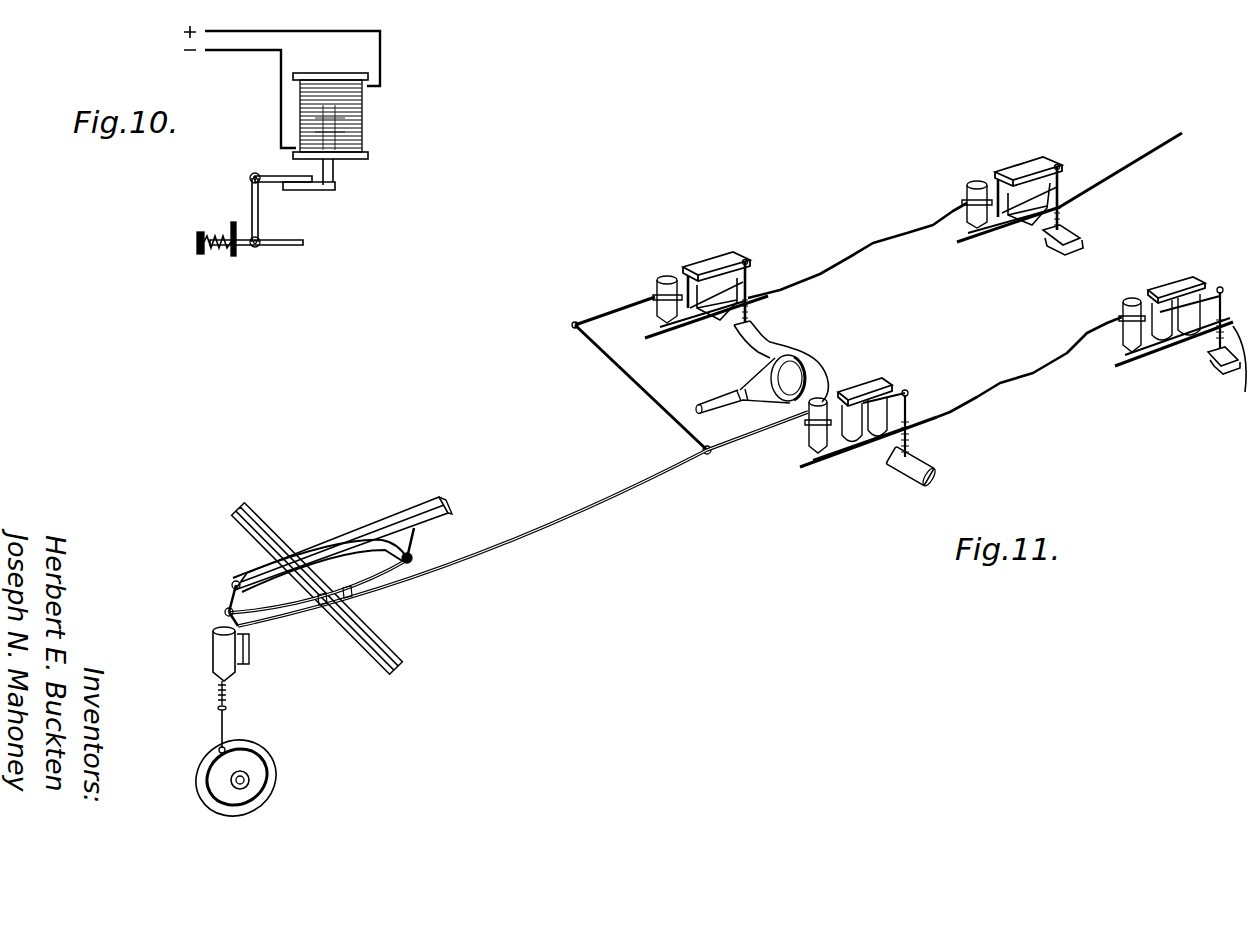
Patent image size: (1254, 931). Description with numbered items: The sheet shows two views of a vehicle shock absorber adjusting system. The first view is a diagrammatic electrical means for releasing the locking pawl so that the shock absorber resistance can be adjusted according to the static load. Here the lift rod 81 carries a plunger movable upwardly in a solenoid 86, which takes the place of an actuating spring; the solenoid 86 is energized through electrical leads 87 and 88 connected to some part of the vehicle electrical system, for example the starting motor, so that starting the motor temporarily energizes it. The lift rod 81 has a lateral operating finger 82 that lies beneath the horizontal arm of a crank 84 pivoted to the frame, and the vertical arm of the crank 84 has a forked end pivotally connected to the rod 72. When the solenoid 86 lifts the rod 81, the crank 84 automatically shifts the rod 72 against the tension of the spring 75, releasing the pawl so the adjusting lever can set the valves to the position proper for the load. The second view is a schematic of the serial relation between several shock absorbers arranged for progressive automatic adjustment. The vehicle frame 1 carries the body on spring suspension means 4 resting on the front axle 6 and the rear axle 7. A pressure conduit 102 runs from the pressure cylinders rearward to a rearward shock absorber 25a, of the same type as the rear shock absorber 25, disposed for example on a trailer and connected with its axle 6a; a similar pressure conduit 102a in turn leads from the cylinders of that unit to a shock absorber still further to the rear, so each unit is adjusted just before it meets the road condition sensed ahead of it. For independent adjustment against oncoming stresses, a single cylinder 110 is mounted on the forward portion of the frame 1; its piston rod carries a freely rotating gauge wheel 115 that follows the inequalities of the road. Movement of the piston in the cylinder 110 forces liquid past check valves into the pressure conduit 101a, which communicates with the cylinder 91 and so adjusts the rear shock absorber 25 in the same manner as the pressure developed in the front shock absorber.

In FIG. 10, the electrical lead 88 is at (383, 52).
In FIG. 10, the electrical lead 87 is at (280, 70).
In FIG. 10, the solenoid 86 is at (363, 130).
In FIG. 10, the lift rod 81 is at (335, 176).
In FIG. 10, the operating finger 82 is at (310, 190).
In FIG. 10, the crank 84 is at (278, 172).
In FIG. 10, the link or rod 72 is at (283, 252).
In FIG. 11, the link or rod 72 is at (655, 333).
In FIG. 10, the spring 75 is at (215, 252).
In FIG. 11, the rear shock absorber 25 is at (733, 230).
In FIG. 11, the rearward shock absorber 25a is at (1010, 165).
In FIG. 11, the cylinder 91 is at (657, 290).
In FIG. 11, the rear axle 7 is at (760, 333).
In FIG. 11, the pressure conduit 102 is at (868, 240).
In FIG. 11, the pressure conduit 102a is at (1105, 183).
In FIG. 11, the axle 6a is at (1075, 236).
In FIG. 11, the pressure conduit 101a is at (573, 507).
In FIG. 11, the frame 1 is at (385, 517).
In FIG. 11, the spring suspension means 4 is at (377, 565).
In FIG. 11, the front axle 6 is at (385, 645).
In FIG. 11, the cylinder 110 is at (218, 648).
In FIG. 11, the gauge wheel 115 is at (268, 778).